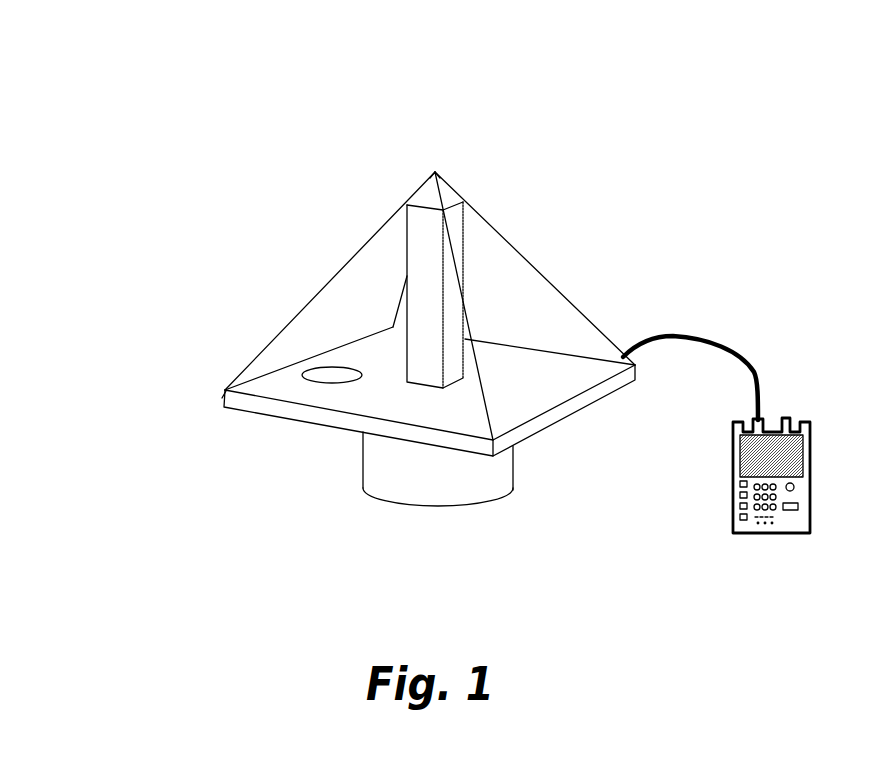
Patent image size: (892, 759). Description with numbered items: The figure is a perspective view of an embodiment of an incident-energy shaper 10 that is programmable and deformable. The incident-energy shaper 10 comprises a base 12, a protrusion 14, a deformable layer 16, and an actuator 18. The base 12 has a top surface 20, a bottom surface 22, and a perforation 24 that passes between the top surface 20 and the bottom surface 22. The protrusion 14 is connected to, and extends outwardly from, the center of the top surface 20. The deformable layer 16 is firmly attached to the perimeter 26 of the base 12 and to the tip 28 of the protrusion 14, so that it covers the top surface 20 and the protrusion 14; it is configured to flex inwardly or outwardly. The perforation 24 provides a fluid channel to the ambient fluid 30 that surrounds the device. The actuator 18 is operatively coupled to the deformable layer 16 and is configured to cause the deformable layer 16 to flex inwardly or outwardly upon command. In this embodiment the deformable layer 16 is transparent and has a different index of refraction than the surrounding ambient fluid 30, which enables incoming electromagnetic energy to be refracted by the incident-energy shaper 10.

The incident-energy shaper 10 is at (108, 72).
The base 12 is at (262, 415).
The protrusion 14 is at (407, 248).
The deformable layer 16 is at (303, 307).
The actuator 18 is at (795, 535).
The top surface 20 is at (565, 368).
The bottom surface 22 is at (585, 412).
The perforation 24 is at (337, 367).
The perimeter 26 is at (222, 398).
The tip 28 is at (450, 163).
The ambient fluid 30 is at (283, 496).